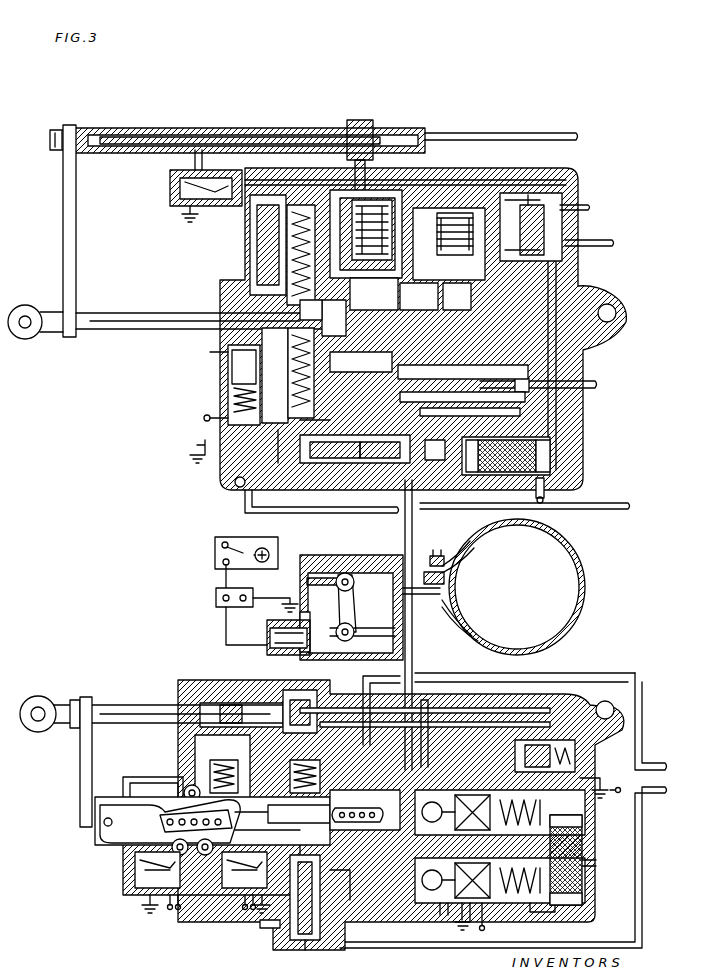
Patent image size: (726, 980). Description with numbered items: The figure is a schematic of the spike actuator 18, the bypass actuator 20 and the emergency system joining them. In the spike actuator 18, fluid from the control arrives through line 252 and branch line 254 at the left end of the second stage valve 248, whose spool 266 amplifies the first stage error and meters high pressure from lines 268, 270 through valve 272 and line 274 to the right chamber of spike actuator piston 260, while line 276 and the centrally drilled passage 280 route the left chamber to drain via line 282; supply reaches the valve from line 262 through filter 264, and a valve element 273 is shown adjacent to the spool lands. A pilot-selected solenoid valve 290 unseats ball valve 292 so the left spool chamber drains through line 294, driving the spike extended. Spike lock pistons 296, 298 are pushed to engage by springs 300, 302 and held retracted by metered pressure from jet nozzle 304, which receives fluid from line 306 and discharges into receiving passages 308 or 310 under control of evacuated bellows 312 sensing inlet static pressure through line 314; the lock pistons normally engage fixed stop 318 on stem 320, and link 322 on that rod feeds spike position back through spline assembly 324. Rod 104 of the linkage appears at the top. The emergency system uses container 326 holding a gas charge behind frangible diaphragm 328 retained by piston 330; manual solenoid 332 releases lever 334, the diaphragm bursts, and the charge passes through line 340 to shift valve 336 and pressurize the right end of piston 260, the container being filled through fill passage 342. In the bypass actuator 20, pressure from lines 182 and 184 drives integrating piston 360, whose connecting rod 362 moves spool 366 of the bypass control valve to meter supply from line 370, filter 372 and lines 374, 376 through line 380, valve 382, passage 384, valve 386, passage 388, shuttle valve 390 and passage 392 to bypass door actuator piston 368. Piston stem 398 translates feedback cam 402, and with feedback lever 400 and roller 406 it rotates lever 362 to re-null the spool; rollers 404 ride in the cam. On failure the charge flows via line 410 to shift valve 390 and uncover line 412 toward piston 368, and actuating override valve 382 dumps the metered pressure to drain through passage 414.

The spike actuator 18 is at (590, 153).
The bypass actuator 20 is at (180, 667).
The rod 104 is at (525, 134).
The line 182 is at (636, 726).
The line 184 is at (636, 806).
The second stage valve 248 is at (230, 470).
The line 252 is at (600, 505).
The branch line 254 is at (278, 470).
The spike actuator piston 260 is at (455, 313).
The line 262 is at (548, 499).
The filter 264 is at (585, 460).
The spool 266 is at (302, 470).
The line 268 is at (322, 501).
The line 270 is at (445, 332).
The valve 272 is at (462, 356).
The valve spool 273 is at (372, 463).
The line 274 is at (490, 366).
The line 276 is at (358, 360).
The centrally drilled passage 280 is at (395, 463).
The line 282 is at (440, 470).
The solenoid valve 290 is at (230, 403).
The ball valve 292 is at (236, 488).
The line 294 is at (228, 350).
The piston 296 is at (287, 258).
The piston 298 is at (262, 368).
The spring 300 is at (272, 232).
The spring 302 is at (232, 382).
The jet nozzle 304 is at (562, 216).
The line 306 is at (568, 272).
The receiving passage 308 is at (448, 178).
The receiving passage 310 is at (470, 172).
The evacuated bellows 312 is at (449, 244).
The line 314 is at (590, 206).
The fixed stop 318 is at (345, 306).
The stem 320 is at (110, 333).
The link 322 is at (63, 222).
The spline assembly 324 is at (230, 128).
The container 326 is at (588, 574).
The frangible diaphragm 328 is at (446, 578).
The piston 330 is at (446, 591).
The solenoid 332 is at (268, 646).
The lever 334 is at (364, 656).
The valve 336 is at (560, 396).
The line 340 is at (490, 494).
The fill passage 342 is at (447, 560).
The integrating piston 360 is at (356, 930).
The connecting rod 362 is at (292, 810).
The spool 366 is at (288, 940).
The bypass door actuator piston 368 is at (306, 656).
The line 370 is at (592, 862).
The filter 372 is at (583, 886).
The line 374 is at (538, 921).
The line 376 is at (415, 900).
The line 380 is at (392, 905).
The manual override solenoid valve 382 is at (440, 925).
The passage 384 is at (422, 845).
The manual override solenoid valve 386 is at (388, 818).
The passage 388 is at (585, 763).
The emergency shuttle valve 390 is at (572, 690).
The passage 392 is at (512, 702).
The piston stem 398 is at (125, 706).
The feedback lever 400 is at (80, 771).
The feedback cam 402 is at (100, 840).
The rollers 404 is at (201, 825).
The roller 406 is at (267, 826).
The line 410 is at (414, 632).
The line 412 is at (440, 710).
The passage 414 is at (464, 935).